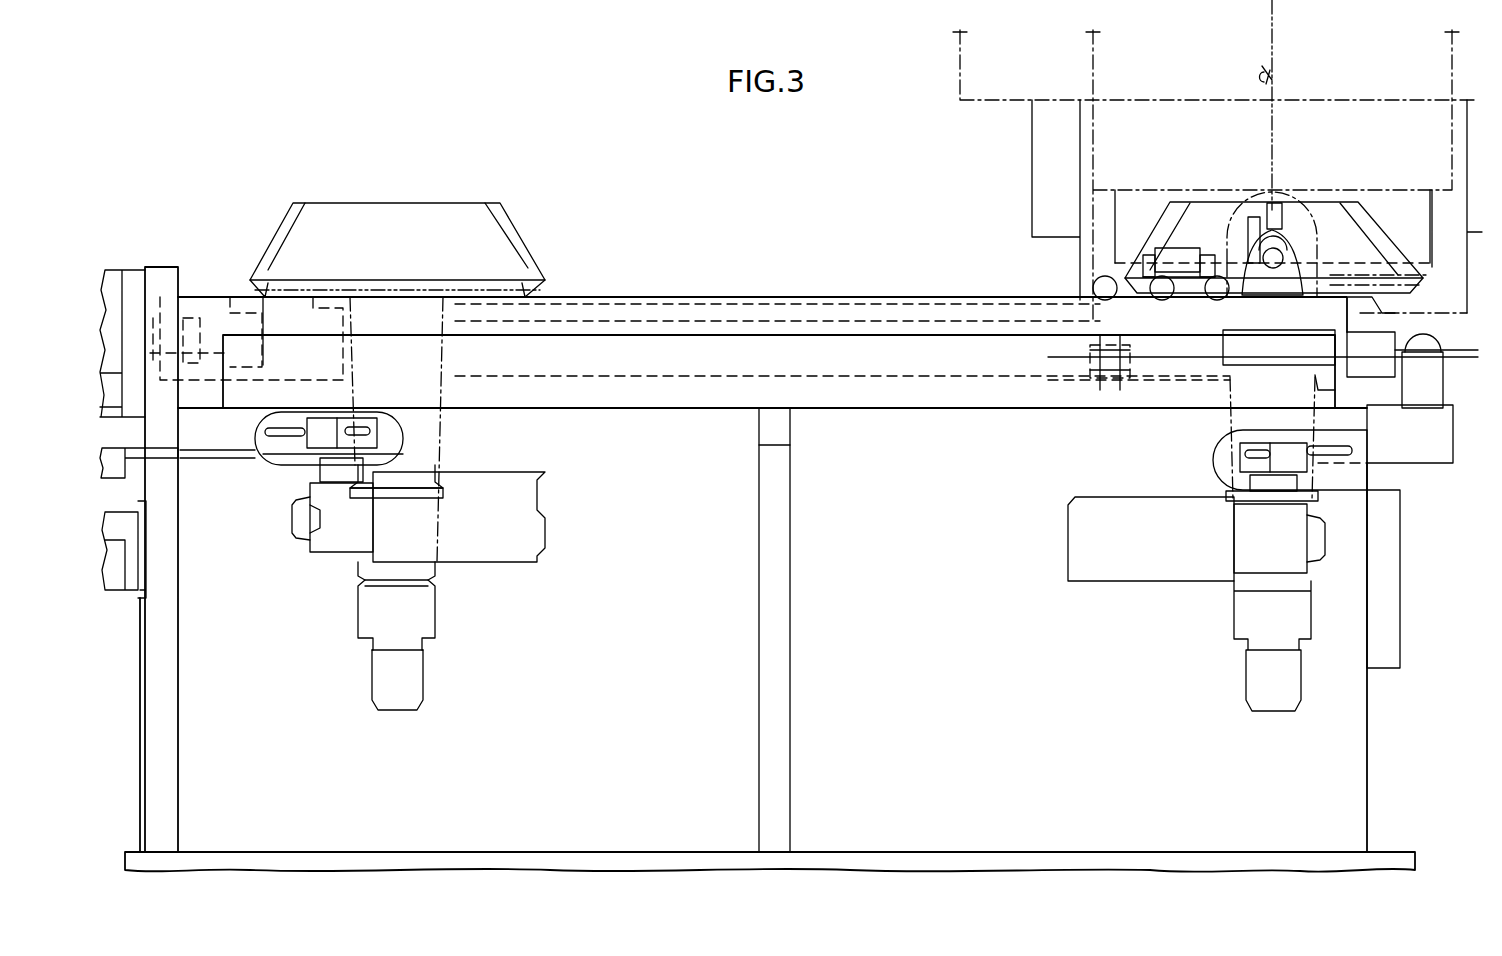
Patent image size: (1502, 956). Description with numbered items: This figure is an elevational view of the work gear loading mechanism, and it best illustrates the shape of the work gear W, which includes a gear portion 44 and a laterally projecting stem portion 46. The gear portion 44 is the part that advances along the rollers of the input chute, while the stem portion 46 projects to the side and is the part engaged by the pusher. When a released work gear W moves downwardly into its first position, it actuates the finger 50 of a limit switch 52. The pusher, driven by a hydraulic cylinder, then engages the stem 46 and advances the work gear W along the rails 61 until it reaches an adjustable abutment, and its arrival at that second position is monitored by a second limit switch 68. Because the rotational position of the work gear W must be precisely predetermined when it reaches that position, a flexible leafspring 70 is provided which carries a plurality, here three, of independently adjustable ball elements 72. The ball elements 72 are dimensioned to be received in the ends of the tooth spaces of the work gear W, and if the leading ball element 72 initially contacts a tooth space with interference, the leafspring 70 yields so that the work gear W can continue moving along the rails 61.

The work gear W is at (508, 203).
The gear portion 44 is at (533, 258).
The stem portion 46 is at (437, 631).
The finger 50 is at (290, 432).
The limit switch 52 is at (520, 481).
The rails 61 is at (853, 297).
The limit switch 68 is at (1068, 536).
The leafspring 70 is at (1470, 356).
The ball elements 72 is at (1092, 277).